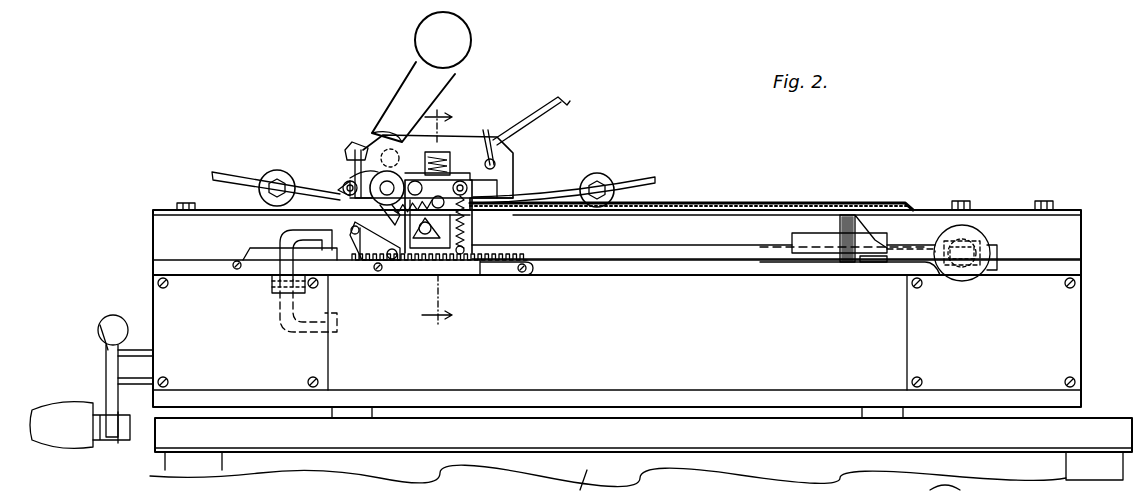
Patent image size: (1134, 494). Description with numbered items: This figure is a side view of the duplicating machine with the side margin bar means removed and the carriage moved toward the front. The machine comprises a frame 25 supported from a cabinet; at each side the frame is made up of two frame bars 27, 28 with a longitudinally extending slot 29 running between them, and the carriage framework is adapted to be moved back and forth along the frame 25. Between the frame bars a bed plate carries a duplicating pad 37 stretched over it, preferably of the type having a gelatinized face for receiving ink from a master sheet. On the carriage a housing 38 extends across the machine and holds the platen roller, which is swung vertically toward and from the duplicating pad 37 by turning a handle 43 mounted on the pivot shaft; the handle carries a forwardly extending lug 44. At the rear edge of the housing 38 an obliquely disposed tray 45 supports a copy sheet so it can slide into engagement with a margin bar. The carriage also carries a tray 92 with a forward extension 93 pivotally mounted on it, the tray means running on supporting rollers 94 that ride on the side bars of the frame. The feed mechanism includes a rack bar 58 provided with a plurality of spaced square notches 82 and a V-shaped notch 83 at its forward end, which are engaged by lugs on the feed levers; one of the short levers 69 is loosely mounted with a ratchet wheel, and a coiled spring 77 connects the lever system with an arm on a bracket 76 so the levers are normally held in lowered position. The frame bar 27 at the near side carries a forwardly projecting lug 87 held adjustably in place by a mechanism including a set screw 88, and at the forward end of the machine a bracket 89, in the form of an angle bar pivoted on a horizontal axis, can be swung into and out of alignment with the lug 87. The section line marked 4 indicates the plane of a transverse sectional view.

The frame 25 is at (1086, 318).
The frame bar 27 is at (709, 215).
The frame bar 28 is at (641, 388).
The longitudinally extending slot 29 is at (600, 249).
The duplicating pad 37 is at (800, 203).
The housing 38 is at (462, 136).
The section line 4- 4 is at (437, 219).
The handle 43 is at (410, 86).
The forwardly extending lug 44 is at (355, 148).
The tray 45 is at (540, 112).
The rack bar 58 is at (508, 282).
The lever 69 is at (962, 490).
The bracket 76 is at (418, 258).
The coiled spring 77 is at (357, 219).
The square notches 82 is at (366, 260).
The V-shaped notch 83 is at (342, 260).
The forwardly projecting lug 87 is at (808, 248).
The set screw 88 is at (970, 230).
The bracket 89 is at (282, 263).
The tray 92 is at (557, 190).
The forward extension 93 is at (222, 172).
The supporting rollers 94 is at (277, 170).